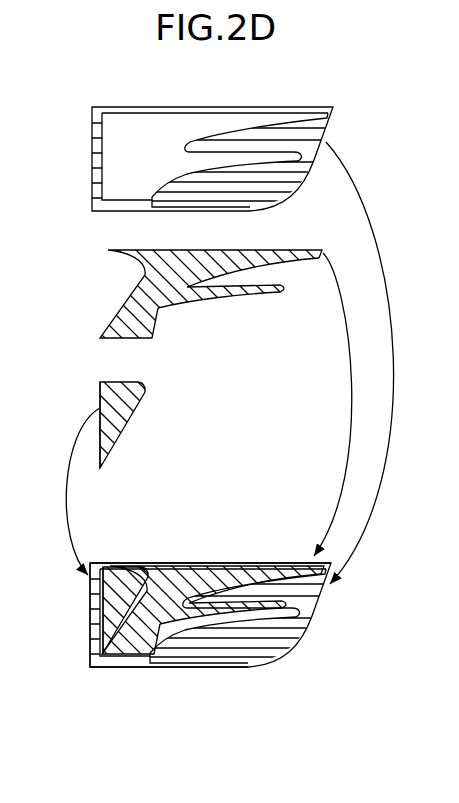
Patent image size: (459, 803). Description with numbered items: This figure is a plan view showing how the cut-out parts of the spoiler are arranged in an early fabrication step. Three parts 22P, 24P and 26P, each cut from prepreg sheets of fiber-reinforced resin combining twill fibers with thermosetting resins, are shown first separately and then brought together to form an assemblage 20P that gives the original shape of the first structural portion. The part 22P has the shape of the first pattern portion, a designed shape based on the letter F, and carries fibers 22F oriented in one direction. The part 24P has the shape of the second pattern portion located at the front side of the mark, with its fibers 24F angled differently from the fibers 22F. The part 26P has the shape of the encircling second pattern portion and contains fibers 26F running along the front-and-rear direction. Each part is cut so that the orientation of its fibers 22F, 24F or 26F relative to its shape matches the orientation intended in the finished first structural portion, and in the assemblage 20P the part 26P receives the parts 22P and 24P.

The assemblage 20P is at (177, 678).
The part 22P is at (197, 252).
The fibers 22F is at (162, 300).
The part 24P is at (149, 400).
The fibers 24F is at (100, 395).
The part 26P is at (184, 201).
The fibers 26F is at (284, 178).